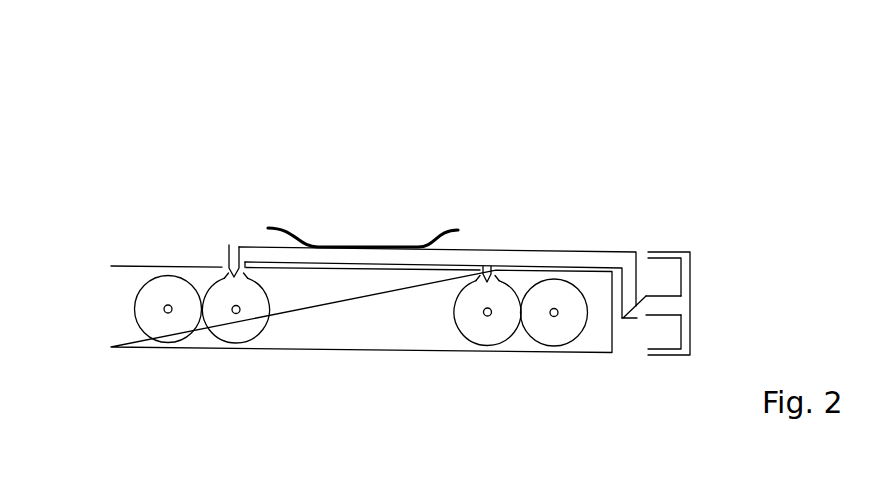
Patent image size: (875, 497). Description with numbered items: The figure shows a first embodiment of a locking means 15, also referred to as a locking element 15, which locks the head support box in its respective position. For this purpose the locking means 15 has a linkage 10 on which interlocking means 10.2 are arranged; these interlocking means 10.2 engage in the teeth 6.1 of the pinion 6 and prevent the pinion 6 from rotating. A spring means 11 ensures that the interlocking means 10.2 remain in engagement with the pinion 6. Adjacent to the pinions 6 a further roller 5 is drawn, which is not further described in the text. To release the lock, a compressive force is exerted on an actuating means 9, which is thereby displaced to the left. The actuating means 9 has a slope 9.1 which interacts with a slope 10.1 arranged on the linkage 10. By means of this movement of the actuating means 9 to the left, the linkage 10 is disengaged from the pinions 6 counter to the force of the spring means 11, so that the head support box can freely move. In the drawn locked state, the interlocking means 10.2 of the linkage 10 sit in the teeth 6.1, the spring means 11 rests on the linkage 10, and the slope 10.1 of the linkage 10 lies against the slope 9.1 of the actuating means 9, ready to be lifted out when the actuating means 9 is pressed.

The roller 5 is at (172, 330).
The pinion 6 is at (240, 330).
The teeth 6.1 is at (224, 274).
The actuating means 9 is at (673, 310).
The slope 9.1 is at (648, 309).
The linkage 10 is at (547, 259).
The slope 10.1 is at (628, 305).
The interlocking means 10.2 is at (232, 252).
The spring means 11 is at (439, 234).
The locking means 15 is at (504, 134).